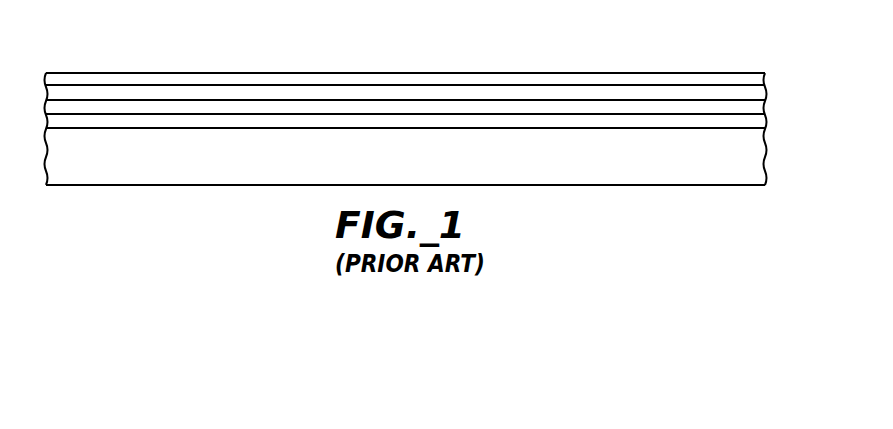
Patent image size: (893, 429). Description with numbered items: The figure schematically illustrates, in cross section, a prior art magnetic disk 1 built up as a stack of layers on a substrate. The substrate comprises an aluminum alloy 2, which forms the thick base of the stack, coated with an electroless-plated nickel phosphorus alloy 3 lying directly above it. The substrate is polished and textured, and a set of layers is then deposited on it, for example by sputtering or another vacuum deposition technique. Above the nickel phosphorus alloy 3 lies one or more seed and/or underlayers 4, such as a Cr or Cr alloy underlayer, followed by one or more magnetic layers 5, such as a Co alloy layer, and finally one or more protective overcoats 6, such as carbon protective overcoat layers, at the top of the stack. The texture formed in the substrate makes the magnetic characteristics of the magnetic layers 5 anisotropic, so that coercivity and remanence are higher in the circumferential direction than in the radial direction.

The magnetic disk 1 is at (616, 44).
The aluminum alloy 2 is at (767, 163).
The electroless-plated nickel phosphorus alloy 3 is at (767, 115).
The underlayer 4 is at (767, 105).
The magnetic layer 5 is at (767, 88).
The protective overcoat 6 is at (767, 73).